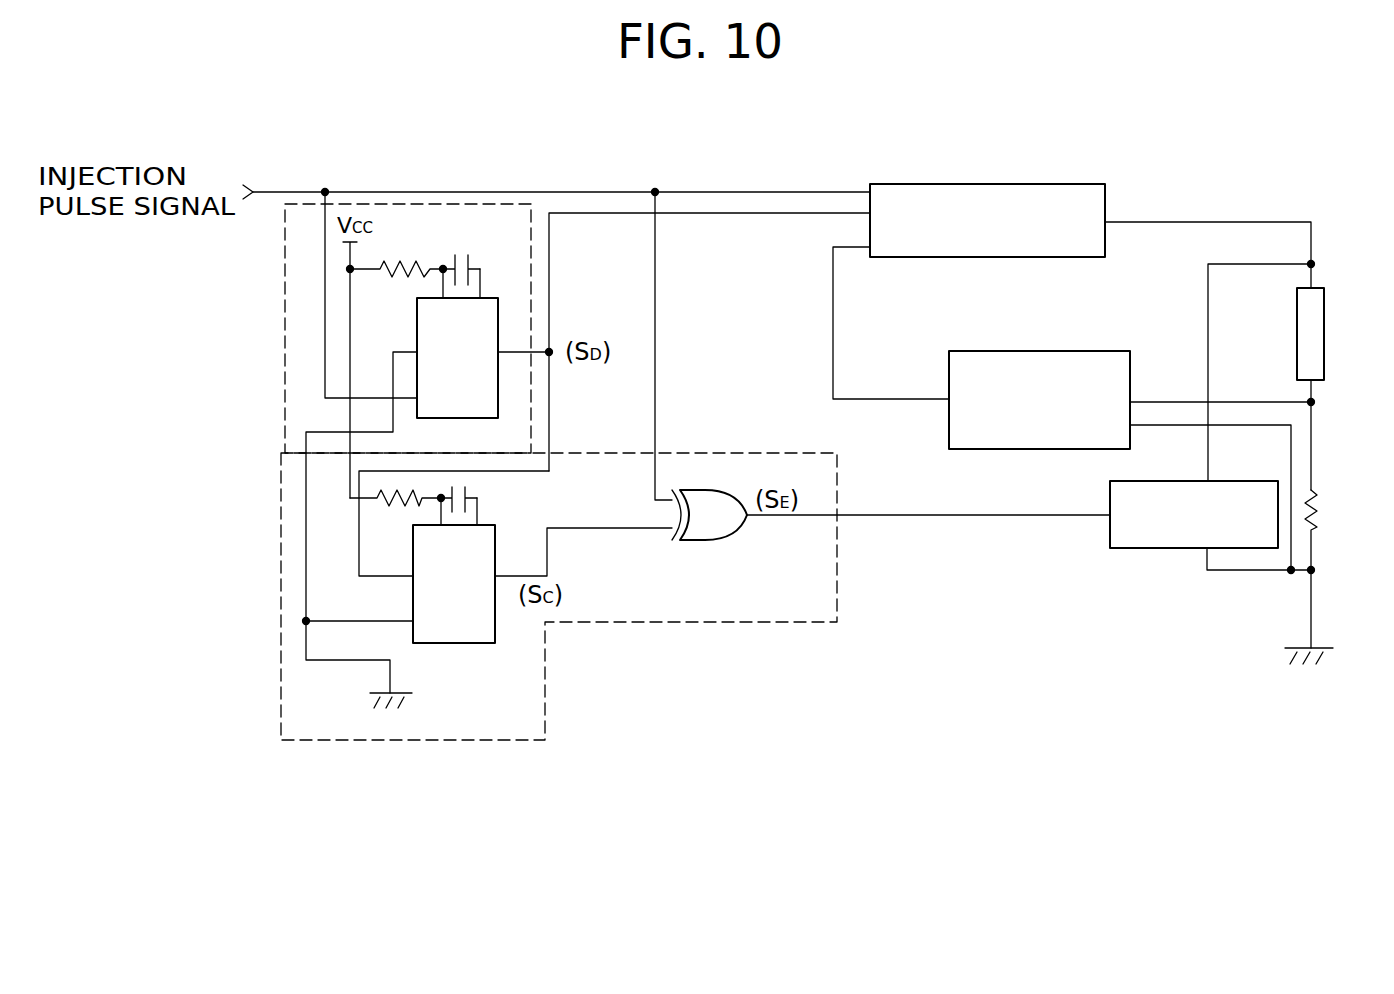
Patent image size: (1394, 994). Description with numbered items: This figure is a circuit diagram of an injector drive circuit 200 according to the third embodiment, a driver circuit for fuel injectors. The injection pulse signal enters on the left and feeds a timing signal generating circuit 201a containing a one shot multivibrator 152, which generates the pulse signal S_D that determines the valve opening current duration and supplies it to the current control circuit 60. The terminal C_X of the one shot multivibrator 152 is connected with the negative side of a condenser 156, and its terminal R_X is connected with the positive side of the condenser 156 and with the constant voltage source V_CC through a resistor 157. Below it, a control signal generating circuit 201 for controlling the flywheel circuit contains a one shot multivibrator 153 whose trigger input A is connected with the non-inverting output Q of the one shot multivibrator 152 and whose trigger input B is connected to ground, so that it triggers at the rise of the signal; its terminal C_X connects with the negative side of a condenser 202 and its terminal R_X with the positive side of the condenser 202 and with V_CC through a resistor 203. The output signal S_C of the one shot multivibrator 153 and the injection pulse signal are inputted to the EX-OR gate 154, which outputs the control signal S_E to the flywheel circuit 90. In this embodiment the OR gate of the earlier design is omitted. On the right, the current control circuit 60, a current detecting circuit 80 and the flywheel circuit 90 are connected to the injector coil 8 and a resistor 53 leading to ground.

The injector drive circuit 200 is at (770, 170).
The control signal generating circuit 201 is at (528, 427).
The timing signal generating circuit 201a is at (693, 626).
The one shot multivibrator 152 is at (498, 312).
The one shot multivibrator 153 is at (456, 644).
The EX-OR gate 154 is at (710, 541).
The condenser 156 is at (484, 238).
The resistor 157 is at (404, 263).
The condenser 202 is at (474, 490).
The resistor 203 is at (397, 506).
The current control circuit 60 is at (1003, 184).
The current detecting circuit 80 is at (1110, 331).
The flywheel circuit 90 is at (1172, 549).
The injector coil 8 is at (1325, 330).
The current detecting resistor 53 is at (1317, 515).